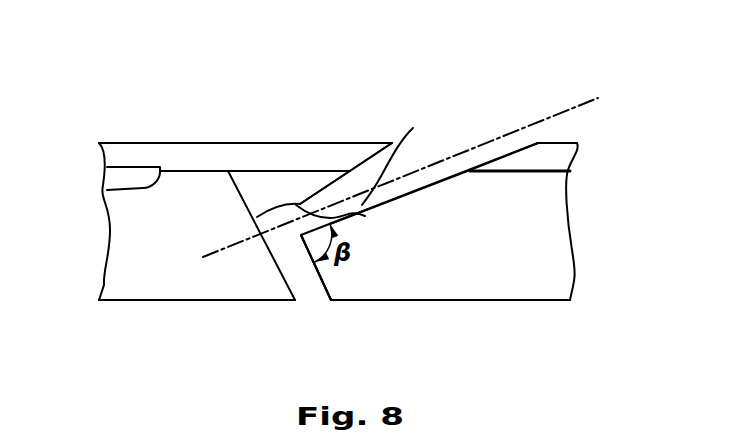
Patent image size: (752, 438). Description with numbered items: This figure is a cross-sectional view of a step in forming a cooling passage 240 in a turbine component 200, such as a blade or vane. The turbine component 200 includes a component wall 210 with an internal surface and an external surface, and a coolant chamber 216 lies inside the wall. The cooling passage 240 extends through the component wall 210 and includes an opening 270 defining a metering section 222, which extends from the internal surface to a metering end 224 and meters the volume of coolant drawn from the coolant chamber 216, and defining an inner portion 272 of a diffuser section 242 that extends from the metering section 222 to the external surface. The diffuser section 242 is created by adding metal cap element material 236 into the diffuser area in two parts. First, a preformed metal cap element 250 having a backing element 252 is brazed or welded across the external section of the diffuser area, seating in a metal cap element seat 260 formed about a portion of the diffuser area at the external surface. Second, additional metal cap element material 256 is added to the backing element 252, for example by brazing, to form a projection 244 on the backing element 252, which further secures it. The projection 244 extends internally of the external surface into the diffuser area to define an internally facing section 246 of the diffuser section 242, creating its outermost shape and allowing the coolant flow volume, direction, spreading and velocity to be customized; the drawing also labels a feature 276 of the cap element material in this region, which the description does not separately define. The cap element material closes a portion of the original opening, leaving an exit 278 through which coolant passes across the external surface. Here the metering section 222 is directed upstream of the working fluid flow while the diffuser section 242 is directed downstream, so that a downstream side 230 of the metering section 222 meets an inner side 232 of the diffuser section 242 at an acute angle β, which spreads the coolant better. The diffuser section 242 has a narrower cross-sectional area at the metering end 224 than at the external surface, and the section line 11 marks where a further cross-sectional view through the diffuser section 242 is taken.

The turbine component 200 is at (117, 90).
The preformed metal cap element 250 is at (201, 122).
The metal cap element seat 260 is at (107, 190).
The upper surface of tongue 276 is at (276, 120).
The backing element 252 is at (382, 132).
The metal cap element material 236 is at (334, 155).
The additional metal cap element material 256 is at (273, 186).
The opening 270 is at (256, 231).
The projection 244 is at (413, 128).
The internally facing section 246 is at (365, 216).
The metering end 224 is at (278, 250).
The component wall 210 is at (550, 236).
The downstream side 230 is at (325, 285).
The metering section 222 is at (307, 283).
The inner portion 272 is at (415, 181).
The cooling passage 240 is at (375, 240).
The diffuser section 242 is at (413, 181).
The inner side 232 is at (480, 177).
The exit 278 is at (500, 153).
The coolant chamber 216 is at (445, 359).
The section line 11- 11 is at (203, 257).